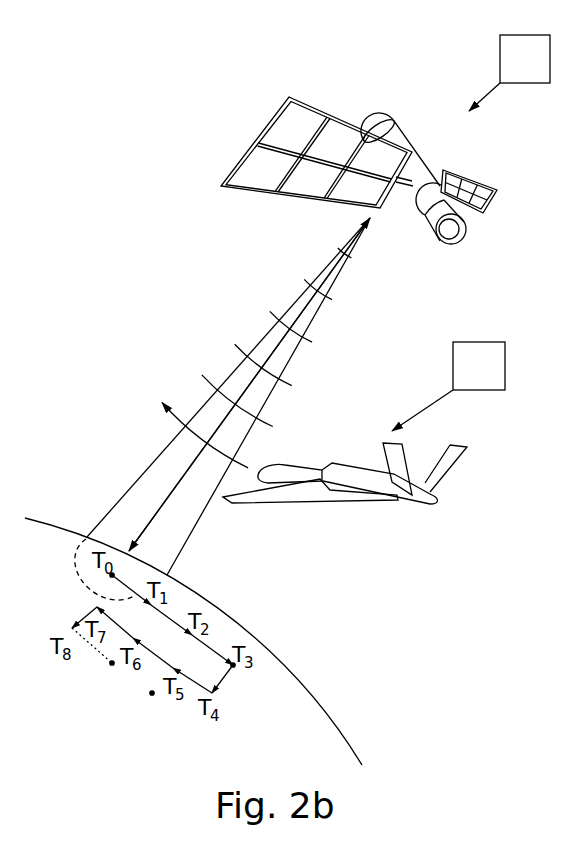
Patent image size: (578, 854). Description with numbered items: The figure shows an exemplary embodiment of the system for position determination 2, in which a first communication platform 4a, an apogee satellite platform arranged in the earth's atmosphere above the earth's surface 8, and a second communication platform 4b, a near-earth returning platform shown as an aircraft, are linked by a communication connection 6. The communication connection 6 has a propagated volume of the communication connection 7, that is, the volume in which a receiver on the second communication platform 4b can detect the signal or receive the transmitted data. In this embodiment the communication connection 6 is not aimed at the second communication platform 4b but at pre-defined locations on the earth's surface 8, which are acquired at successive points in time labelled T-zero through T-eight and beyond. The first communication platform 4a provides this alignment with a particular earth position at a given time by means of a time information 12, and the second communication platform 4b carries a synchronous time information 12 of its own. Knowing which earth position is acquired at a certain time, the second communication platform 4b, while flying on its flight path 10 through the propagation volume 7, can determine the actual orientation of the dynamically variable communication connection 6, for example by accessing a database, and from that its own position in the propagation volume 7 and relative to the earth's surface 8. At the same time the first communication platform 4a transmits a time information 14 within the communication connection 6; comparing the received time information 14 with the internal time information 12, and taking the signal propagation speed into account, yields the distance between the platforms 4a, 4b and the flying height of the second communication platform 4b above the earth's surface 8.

The system for position determination 2 is at (201, 246).
The first communication platform 4a is at (397, 128).
The second communication platform 4b is at (400, 503).
The communication connection 6 is at (245, 382).
The propagated volume of the communication connection 7 is at (203, 512).
The earth's surface 8 is at (279, 711).
The flight path 10 is at (173, 420).
The time information 12 is at (512, 87).
The time information 14 is at (376, 262).